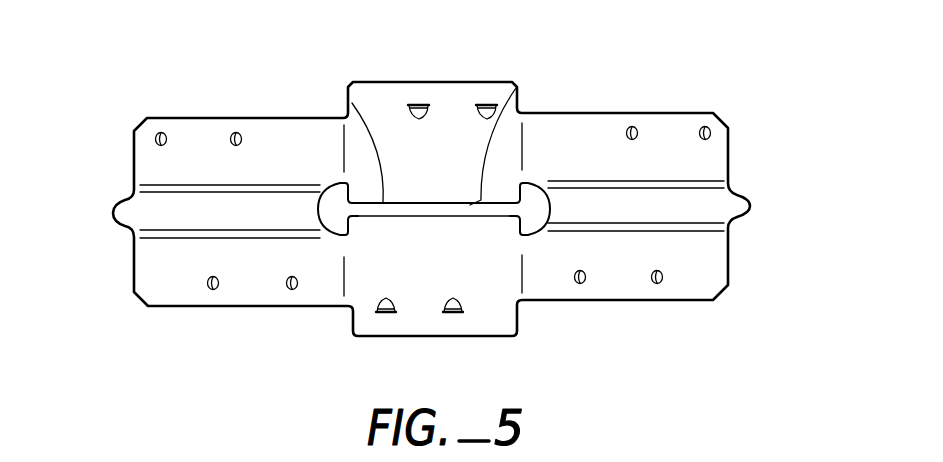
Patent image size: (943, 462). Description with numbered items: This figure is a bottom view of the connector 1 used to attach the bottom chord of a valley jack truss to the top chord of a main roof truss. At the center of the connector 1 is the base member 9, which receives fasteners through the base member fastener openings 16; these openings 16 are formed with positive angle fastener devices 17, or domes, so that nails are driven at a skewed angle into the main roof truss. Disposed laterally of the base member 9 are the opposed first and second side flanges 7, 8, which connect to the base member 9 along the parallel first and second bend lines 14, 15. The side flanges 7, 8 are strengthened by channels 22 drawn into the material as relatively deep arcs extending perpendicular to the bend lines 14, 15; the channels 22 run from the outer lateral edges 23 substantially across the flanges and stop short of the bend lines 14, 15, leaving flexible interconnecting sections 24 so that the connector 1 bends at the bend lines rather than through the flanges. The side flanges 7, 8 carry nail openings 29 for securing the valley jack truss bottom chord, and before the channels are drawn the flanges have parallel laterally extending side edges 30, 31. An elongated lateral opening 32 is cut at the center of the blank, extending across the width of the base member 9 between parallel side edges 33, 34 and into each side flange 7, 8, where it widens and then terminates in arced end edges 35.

The connector 1 is at (450, 84).
The first side flange 7 is at (165, 115).
The second side flange 8 is at (728, 115).
The base member 9 is at (520, 327).
The first bend line 14 is at (344, 146).
The second bend line 15 is at (534, 183).
The base member fastener openings 16 is at (412, 104).
The positive angle fastener devices 17 is at (430, 118).
The channels 22 is at (121, 229).
The outer lateral edges 23 is at (133, 160).
The flexible interconnecting sections 24 is at (526, 137).
The nail openings 29 is at (231, 136).
The first laterally extending side edge 30 is at (152, 307).
The second laterally extending side edge 31 is at (152, 117).
The elongated lateral opening 32 is at (519, 90).
The first side edge of elongated lateral opening 33 is at (350, 112).
The second side edge of elongated lateral opening 34 is at (383, 216).
The arced end edges 35 is at (320, 209).